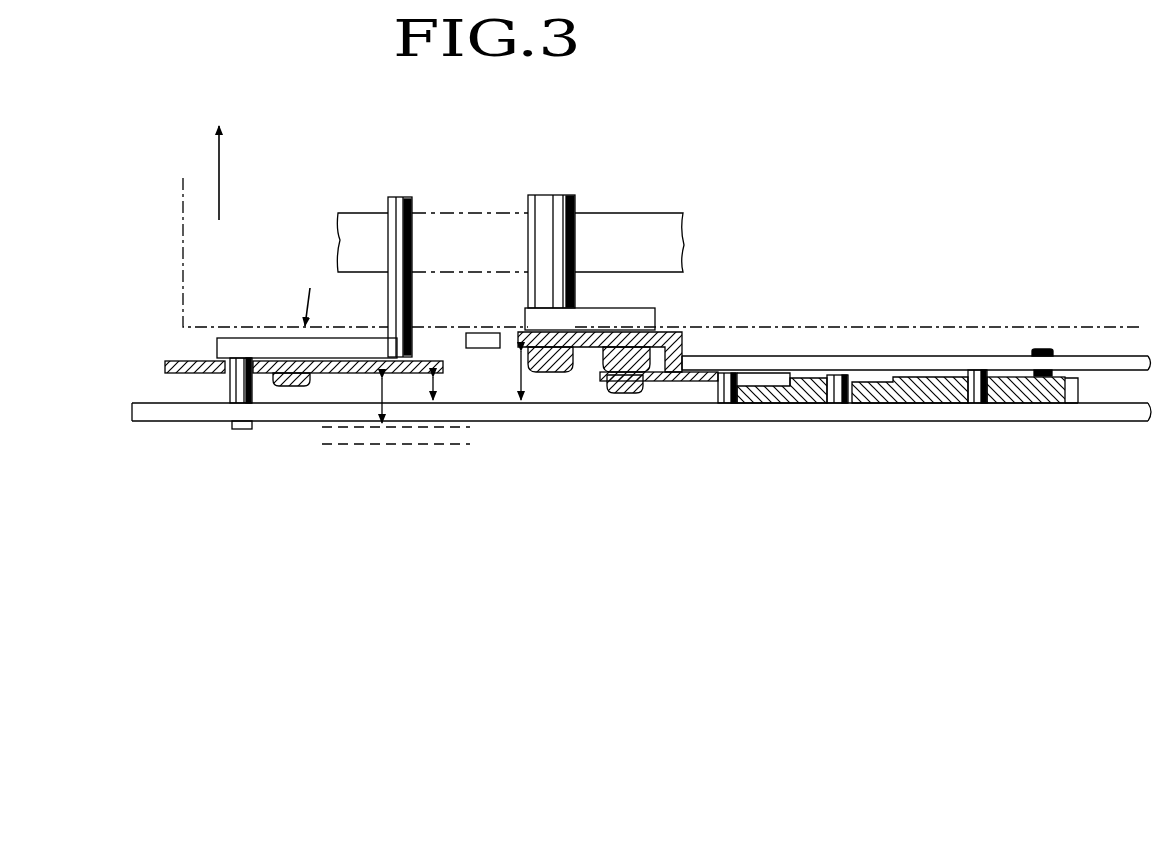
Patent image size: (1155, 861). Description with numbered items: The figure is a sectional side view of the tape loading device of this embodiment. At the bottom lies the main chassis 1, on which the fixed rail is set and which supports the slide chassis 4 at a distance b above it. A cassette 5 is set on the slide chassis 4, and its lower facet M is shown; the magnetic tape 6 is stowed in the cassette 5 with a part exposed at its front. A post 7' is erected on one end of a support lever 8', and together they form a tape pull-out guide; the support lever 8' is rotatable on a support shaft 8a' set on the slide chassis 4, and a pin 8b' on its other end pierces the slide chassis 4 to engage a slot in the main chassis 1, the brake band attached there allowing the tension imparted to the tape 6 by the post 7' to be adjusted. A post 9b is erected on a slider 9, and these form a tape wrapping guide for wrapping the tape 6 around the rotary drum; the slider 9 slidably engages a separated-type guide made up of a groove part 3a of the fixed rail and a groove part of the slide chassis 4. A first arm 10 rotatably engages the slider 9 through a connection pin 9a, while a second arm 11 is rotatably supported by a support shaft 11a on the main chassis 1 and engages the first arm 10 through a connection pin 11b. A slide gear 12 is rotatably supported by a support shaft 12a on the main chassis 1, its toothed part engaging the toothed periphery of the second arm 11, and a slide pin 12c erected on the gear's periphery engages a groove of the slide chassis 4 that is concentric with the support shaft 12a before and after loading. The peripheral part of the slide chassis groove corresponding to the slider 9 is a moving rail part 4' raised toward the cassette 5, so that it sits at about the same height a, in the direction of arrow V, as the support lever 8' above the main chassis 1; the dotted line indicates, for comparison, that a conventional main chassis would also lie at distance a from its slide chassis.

The main chassis 1 is at (178, 422).
The groove part 3a is at (496, 348).
The slide chassis 4 is at (282, 345).
The moving rail part 4' is at (647, 323).
The cassette 5 is at (183, 228).
The magnetic tape 6 is at (613, 213).
The post 7' is at (377, 246).
The support lever 8' is at (307, 311).
The support shaft 8a' is at (300, 435).
The pin 8b' is at (217, 432).
The slider 9 is at (622, 308).
The connection pin 9a is at (625, 393).
The post 9b is at (525, 195).
The first arm 10 is at (692, 381).
The second arm 11 is at (808, 403).
The support shaft 11a is at (844, 375).
The connection pin 11b is at (737, 403).
The slide gear 12 is at (950, 400).
The support shaft 12a is at (978, 370).
The slide pin 12c is at (1043, 349).
The arrow V is at (219, 149).
The lower facet M is at (309, 291).
The height a is at (440, 387).
The distance b is at (445, 391).